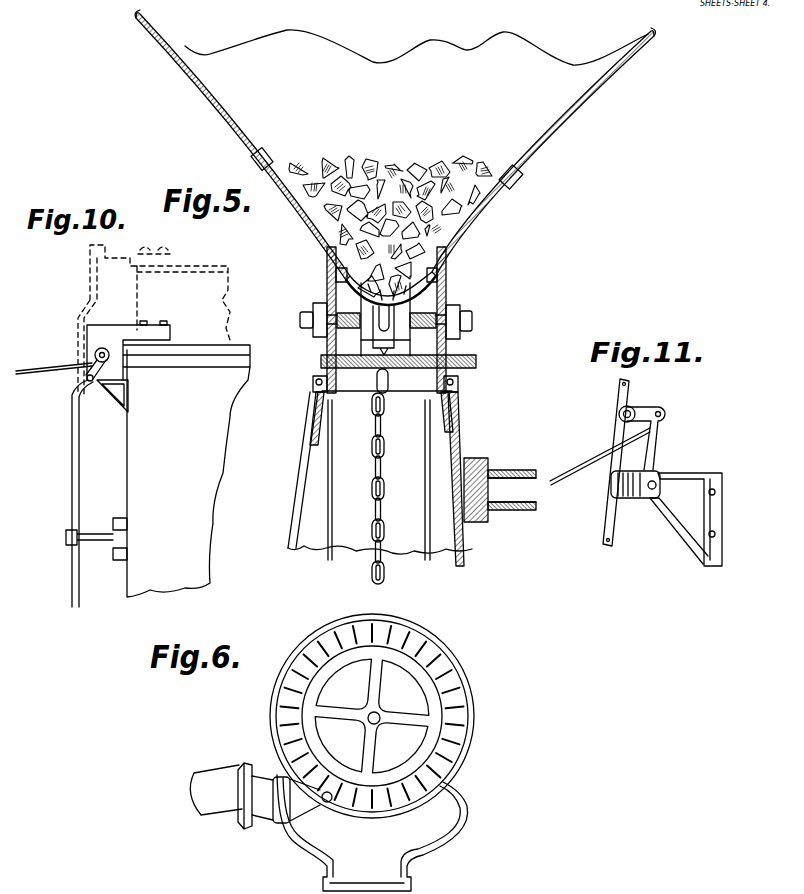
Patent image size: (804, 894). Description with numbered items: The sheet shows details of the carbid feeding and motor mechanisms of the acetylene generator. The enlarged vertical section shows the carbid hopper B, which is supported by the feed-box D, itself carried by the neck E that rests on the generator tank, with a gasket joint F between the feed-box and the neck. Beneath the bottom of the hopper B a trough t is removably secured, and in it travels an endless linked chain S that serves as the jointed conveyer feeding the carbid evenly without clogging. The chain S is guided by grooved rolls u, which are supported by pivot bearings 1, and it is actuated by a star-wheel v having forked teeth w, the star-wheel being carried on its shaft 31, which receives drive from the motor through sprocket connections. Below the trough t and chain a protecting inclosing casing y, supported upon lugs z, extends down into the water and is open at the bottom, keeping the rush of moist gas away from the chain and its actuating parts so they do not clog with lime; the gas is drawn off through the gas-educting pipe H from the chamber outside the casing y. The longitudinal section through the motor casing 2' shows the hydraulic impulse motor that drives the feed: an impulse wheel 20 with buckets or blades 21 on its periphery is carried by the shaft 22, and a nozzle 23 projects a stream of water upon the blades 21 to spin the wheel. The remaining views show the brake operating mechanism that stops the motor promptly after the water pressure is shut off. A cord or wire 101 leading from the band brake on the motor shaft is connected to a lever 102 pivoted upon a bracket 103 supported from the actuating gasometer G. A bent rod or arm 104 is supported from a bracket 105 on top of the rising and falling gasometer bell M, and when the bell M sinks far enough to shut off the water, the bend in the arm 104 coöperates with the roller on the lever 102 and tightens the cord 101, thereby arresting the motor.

In FIG. 5, the carbid hopper B is at (563, 117).
In FIG. 5, the feed-box D is at (330, 280).
In FIG. 5, the linked chain S is at (430, 270).
In FIG. 5, the trough t is at (392, 300).
In FIG. 5, the pivot bearings 1 is at (306, 313).
In FIG. 5, the grooved rolls u is at (403, 342).
In FIG. 5, the shaft of the star-wheel 31 is at (467, 369).
In FIG. 5, the star-wheel v is at (383, 348).
In FIG. 5, the forked teeth w is at (392, 365).
In FIG. 5, the gasket joint F is at (316, 386).
In FIG. 5, the lugs z is at (306, 425).
In FIG. 5, the neck E is at (303, 487).
In FIG. 5, the protecting inclosing casing y is at (330, 479).
In FIG. 5, the gas-educting pipe H is at (503, 472).
In FIG. 10, the bracket 105 is at (125, 250).
In FIG. 10, the gasometer bell M is at (154, 320).
In FIG. 10, the actuating gasometer G is at (158, 459).
In FIG. 10, the cord or wire 101 is at (32, 368).
In FIG. 11, the cord or wire 101 is at (572, 480).
In FIG. 10, the lever 102 is at (87, 374).
In FIG. 11, the lever 102 is at (654, 457).
In FIG. 10, the bracket 103 is at (120, 403).
In FIG. 11, the bracket 103 is at (685, 530).
In FIG. 10, the bent rod or arm 104 is at (72, 474).
In FIG. 11, the bent rod or arm 104 is at (607, 529).
In FIG. 6, the housing 2' is at (381, 752).
In FIG. 6, the impulse wheel 20 is at (423, 717).
In FIG. 6, the buckets or blades 21 is at (443, 758).
In FIG. 6, the shaft 22 is at (378, 725).
In FIG. 6, the nozzle 23 is at (208, 782).